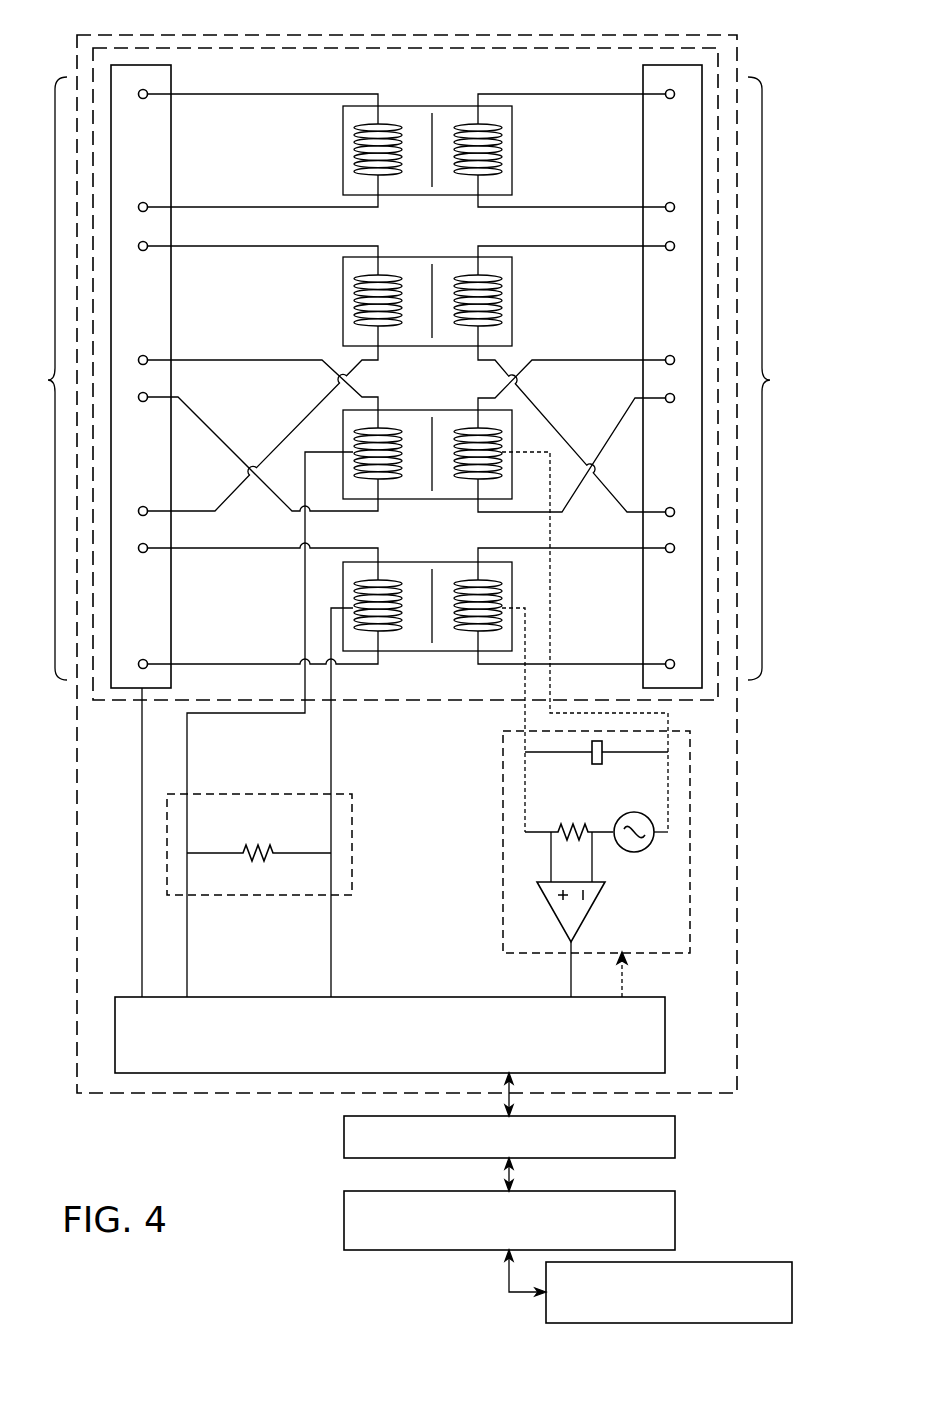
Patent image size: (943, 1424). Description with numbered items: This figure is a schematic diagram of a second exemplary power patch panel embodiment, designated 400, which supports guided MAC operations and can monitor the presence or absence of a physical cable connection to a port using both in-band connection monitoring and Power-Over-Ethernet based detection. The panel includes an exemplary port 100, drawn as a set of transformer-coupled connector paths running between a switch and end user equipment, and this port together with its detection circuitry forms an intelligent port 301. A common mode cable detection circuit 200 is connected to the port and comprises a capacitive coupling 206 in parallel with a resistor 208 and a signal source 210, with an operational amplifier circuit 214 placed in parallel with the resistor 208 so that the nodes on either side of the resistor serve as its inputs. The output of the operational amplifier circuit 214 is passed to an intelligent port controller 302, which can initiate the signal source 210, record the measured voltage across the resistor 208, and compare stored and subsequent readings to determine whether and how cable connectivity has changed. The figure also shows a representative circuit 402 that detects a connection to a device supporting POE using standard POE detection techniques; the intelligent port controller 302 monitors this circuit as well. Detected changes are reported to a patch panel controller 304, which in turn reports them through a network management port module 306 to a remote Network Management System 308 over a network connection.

The patch panel system 400 is at (778, 30).
The port 100 is at (557, 35).
The intelligent port 301 is at (461, 36).
The cable detection circuit 200 is at (503, 773).
The capacitive coupling 206 is at (591, 762).
The resistor 208 is at (566, 828).
The signal source 210 is at (636, 853).
The operational amplifier circuit 214 is at (588, 918).
The intelligent port controller 302 is at (404, 997).
The patch panel controller 304 is at (675, 1122).
The network management port module 306 is at (665, 1192).
The Network Management System 308 is at (750, 1262).
The circuit 402 is at (352, 812).